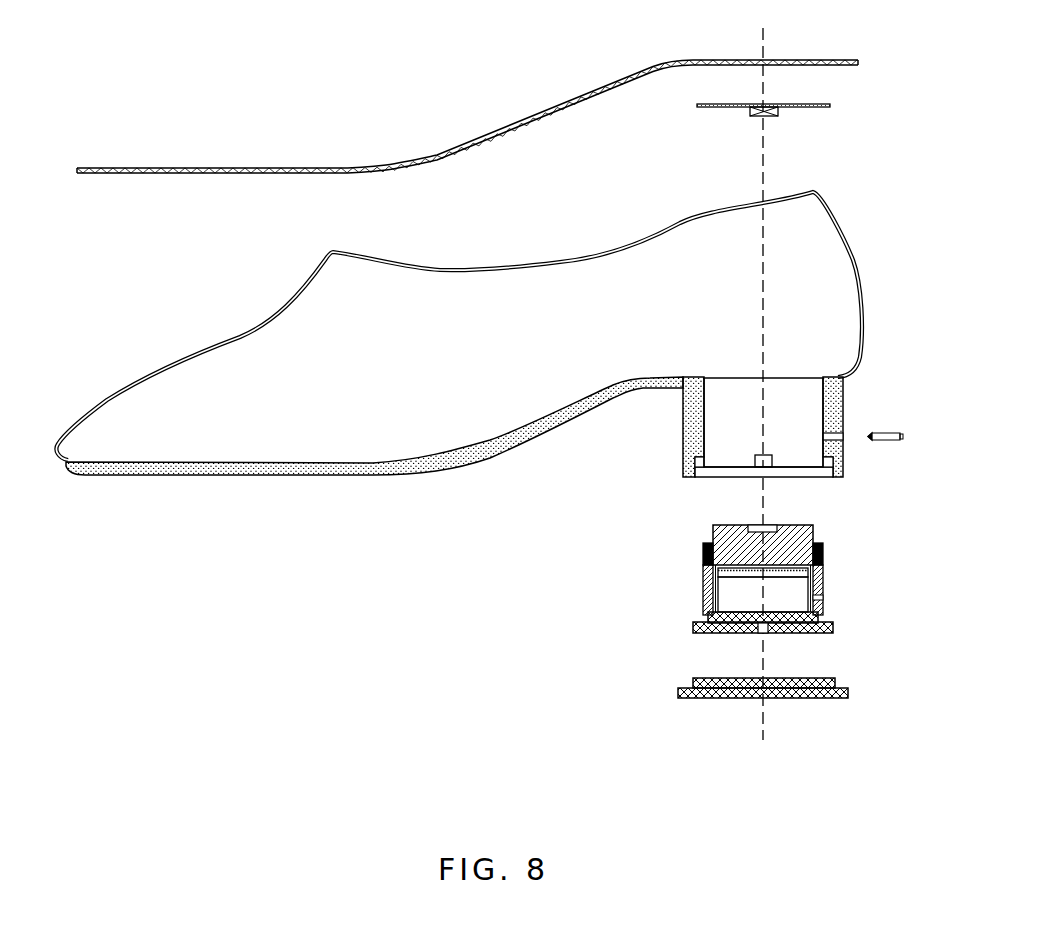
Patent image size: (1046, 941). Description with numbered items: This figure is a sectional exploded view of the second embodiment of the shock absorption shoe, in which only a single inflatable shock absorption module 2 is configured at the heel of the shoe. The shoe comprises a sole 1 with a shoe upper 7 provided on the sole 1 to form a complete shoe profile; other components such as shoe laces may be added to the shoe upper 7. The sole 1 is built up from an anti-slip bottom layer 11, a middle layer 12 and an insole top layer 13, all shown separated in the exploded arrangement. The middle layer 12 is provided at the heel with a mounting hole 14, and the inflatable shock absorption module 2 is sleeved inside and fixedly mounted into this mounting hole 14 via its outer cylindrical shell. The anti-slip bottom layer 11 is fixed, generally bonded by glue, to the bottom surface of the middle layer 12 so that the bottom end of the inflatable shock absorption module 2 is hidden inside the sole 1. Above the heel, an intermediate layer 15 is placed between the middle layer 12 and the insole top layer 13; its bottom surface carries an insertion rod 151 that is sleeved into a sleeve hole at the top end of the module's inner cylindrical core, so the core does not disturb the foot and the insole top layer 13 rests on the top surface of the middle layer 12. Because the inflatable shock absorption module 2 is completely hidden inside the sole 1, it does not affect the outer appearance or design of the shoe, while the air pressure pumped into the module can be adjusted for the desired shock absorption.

The sole 1 is at (460, 495).
The inflatable shock absorption module 2 is at (692, 590).
The shoe upper 7 is at (277, 313).
The anti-slip bottom layer 11 is at (808, 700).
The middle layer 12 is at (840, 415).
The insole top layer 13 is at (635, 80).
The mounting hole 14 is at (768, 418).
The intermediate layer 15 is at (699, 107).
The insertion rod 151 is at (777, 113).